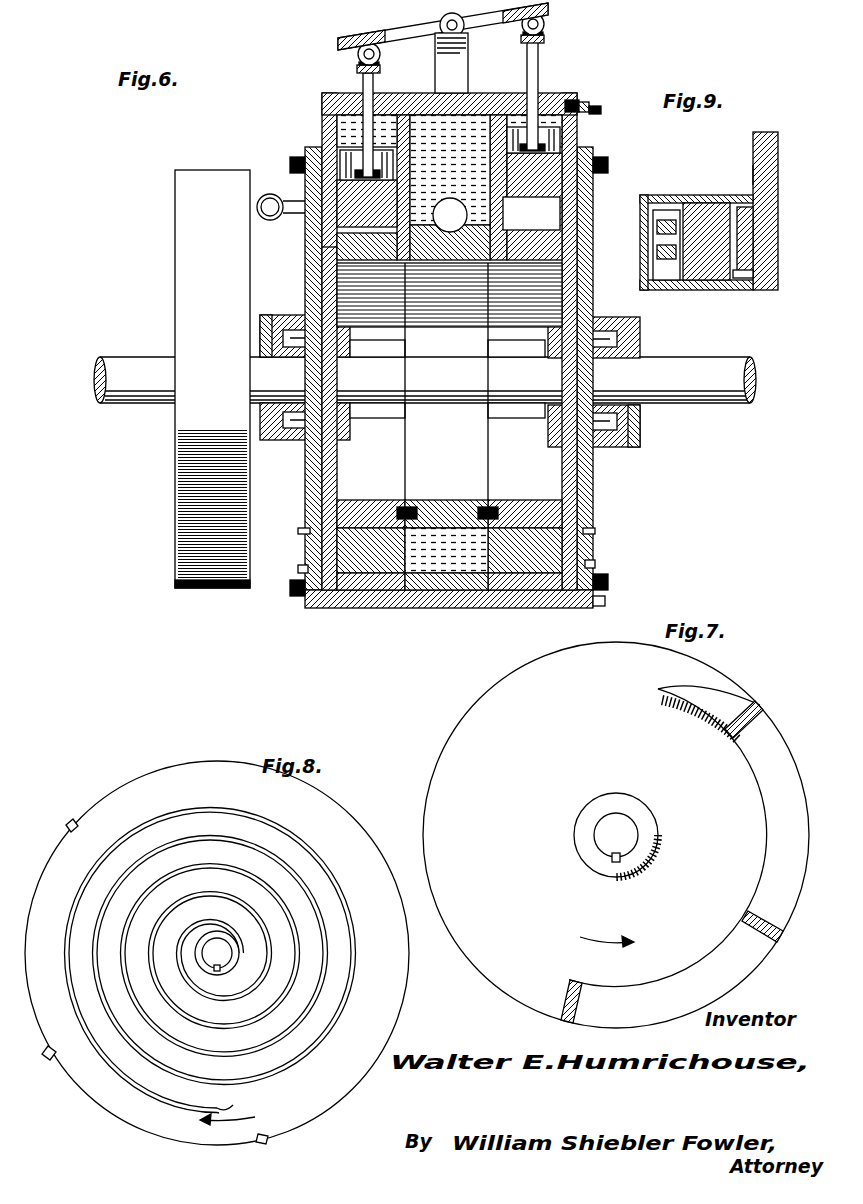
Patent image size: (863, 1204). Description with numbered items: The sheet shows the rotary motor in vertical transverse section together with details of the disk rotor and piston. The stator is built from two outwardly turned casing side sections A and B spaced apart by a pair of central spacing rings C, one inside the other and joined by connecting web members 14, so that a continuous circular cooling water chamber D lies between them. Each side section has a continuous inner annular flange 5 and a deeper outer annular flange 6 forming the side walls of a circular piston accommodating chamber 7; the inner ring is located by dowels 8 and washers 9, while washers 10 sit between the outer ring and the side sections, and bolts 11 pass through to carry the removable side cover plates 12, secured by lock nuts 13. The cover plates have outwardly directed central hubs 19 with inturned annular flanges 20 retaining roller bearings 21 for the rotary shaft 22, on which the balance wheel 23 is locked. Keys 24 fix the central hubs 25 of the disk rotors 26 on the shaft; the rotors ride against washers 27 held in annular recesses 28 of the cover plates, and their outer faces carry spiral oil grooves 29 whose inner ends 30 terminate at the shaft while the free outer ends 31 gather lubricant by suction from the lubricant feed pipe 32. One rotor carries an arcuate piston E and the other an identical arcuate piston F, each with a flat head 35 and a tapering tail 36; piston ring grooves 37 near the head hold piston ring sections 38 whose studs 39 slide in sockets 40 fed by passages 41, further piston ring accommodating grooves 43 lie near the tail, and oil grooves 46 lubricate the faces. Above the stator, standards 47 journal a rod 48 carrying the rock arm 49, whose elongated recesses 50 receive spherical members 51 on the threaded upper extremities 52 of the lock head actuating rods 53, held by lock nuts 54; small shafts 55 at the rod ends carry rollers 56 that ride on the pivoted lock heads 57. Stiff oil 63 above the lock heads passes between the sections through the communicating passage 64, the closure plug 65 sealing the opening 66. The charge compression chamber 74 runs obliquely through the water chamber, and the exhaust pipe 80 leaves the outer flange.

In FIG. 6, the inner annular flange 5 is at (345, 500).
In FIG. 6, the outer annular flange 6 is at (332, 610).
In FIG. 6, the piston accommodating chamber 7 is at (375, 528).
In FIG. 6, the dowels 8 is at (445, 505).
In FIG. 6, the washers 9 is at (405, 507).
In FIG. 6, the washers 10 is at (395, 600).
In FIG. 6, the bolts 11 is at (290, 162).
In FIG. 6, the side cover plates 12 is at (306, 506).
In FIG. 6, the lock nuts 13 is at (298, 570).
In FIG. 6, the connecting web members 14 is at (468, 592).
In FIG. 6, the central hubs 19 is at (292, 441).
In FIG. 6, the inturned annular flanges 20 is at (262, 320).
In FIG. 6, the roller bearings 21 is at (300, 316).
In FIG. 6, the rotary shaft 22 is at (106, 404).
In FIG. 6, the balance wheel 23 is at (198, 340).
In FIG. 6, the keys 24 is at (350, 410).
In FIG. 6, the central hubs 25 is at (358, 345).
In FIG. 7, the central hubs 25 is at (616, 792).
In FIG. 6, the disk rotors 26 is at (338, 455).
In FIG. 7, the disk rotors 26 is at (616, 835).
In FIG. 8, the disk rotors 26 is at (343, 830).
In FIG. 9, the disk rotors 26 is at (768, 134).
In FIG. 6, the washers 27 is at (312, 609).
In FIG. 6, the annular recesses 28 is at (605, 600).
In FIG. 6, the spiral oil grooves 29 is at (322, 272).
In FIG. 8, the spiral oil grooves 29 is at (190, 867).
In FIG. 9, the spiral oil grooves 29 is at (778, 176).
In FIG. 8, the inner ends 30 is at (239, 940).
In FIG. 8, the free outer ends 31 is at (228, 1106).
In FIG. 6, the lubricant feed pipe 32 is at (298, 531).
In FIG. 7, the flat head 35 is at (562, 990).
In FIG. 7, the tapering tail 36 is at (682, 684).
In FIG. 9, the piston ring grooves 37 is at (708, 203).
In FIG. 9, the piston ring sections 38 is at (648, 197).
In FIG. 9, the studs 39 is at (735, 198).
In FIG. 9, the sockets 40 is at (755, 283).
In FIG. 9, the passages 41 is at (752, 240).
In FIG. 7, the piston ring accommodating grooves 43 is at (758, 712).
In FIG. 8, the piston ring accommodating grooves 43 is at (68, 826).
In FIG. 7, the oil grooves 46 is at (765, 910).
In FIG. 8, the oil grooves 46 is at (48, 1056).
In FIG. 6, the standards 47 is at (468, 58).
In FIG. 6, the rod 48 is at (440, 22).
In FIG. 6, the rock arm 49 is at (400, 30).
In FIG. 6, the elongated recesses 50 is at (358, 47).
In FIG. 6, the spherical members 51 is at (358, 58).
In FIG. 6, the threaded upper extremities 52 is at (362, 95).
In FIG. 6, the lock head actuating rods 53 is at (376, 90).
In FIG. 6, the lock nuts 54 is at (356, 70).
In FIG. 6, the small shafts 55 is at (345, 172).
In FIG. 6, the rollers 56 is at (352, 157).
In FIG. 6, the lock heads 57 is at (330, 248).
In FIG. 6, the stiff oil 63 is at (582, 103).
In FIG. 6, the communicating passage 64 is at (487, 100).
In FIG. 6, the closure plug 65 is at (602, 112).
In FIG. 6, the opening 66 is at (590, 105).
In FIG. 6, the charge compression chamber 74 is at (531, 213).
In FIG. 6, the exhaust pipe 80 is at (262, 205).
In FIG. 6, the casing side section A is at (362, 592).
In FIG. 6, the casing side section B is at (565, 592).
In FIG. 6, the spacing rings C is at (450, 498).
In FIG. 6, the cooling water chamber D is at (430, 592).
In FIG. 6, the arcuate piston E is at (320, 610).
In FIG. 7, the arcuate piston E is at (768, 832).
In FIG. 9, the arcuate piston E is at (742, 240).
In FIG. 6, the arcuate piston F is at (525, 592).